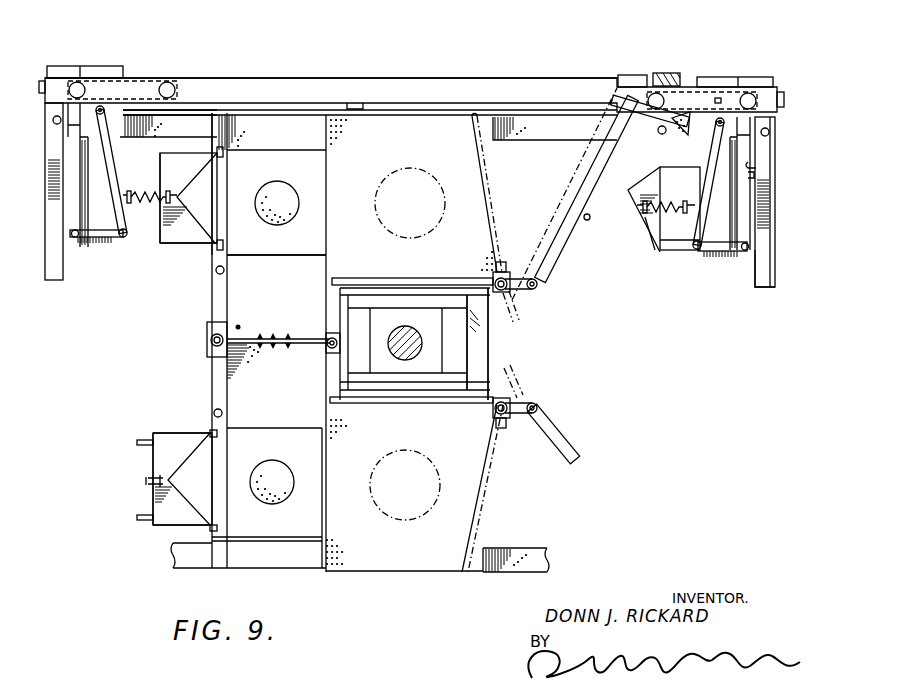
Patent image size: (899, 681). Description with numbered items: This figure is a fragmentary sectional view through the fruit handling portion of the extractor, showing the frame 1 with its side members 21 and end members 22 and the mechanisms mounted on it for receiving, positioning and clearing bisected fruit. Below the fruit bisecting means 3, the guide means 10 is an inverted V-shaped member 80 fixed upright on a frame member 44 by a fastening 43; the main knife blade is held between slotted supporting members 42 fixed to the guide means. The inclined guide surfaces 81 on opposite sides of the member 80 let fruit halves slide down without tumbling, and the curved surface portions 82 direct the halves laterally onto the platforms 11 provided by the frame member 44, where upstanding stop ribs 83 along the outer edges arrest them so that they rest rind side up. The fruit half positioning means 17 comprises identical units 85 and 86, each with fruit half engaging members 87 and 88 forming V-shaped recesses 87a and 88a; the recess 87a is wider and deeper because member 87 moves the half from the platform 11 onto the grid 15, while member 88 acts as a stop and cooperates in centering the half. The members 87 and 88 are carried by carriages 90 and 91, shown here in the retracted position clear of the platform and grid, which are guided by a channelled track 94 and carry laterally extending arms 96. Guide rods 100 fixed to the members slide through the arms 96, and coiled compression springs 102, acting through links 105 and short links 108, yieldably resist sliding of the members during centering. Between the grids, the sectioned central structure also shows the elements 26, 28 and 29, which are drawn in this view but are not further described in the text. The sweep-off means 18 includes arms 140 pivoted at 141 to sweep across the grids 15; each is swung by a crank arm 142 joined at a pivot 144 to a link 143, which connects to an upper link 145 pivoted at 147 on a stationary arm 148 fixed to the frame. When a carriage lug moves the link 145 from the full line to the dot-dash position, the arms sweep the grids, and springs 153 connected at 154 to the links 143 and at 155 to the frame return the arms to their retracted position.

The frame assembly 1 is at (405, 77).
The fruit bisecting means 3 is at (252, 330).
The guide means 10 is at (223, 375).
The platforms 11 is at (280, 254).
The screen members or grids 15 is at (330, 172).
The fruit half positioning means 17 is at (188, 250).
The sweep-off means 18 is at (436, 276).
The side members 21 is at (553, 140).
The end members 22 is at (762, 278).
The shaft 26 is at (403, 327).
The center block 28 is at (437, 356).
The side block 29 is at (484, 348).
The slotted supporting members 42 is at (207, 337).
The fastening 43 is at (213, 413).
The frame member 44 is at (247, 560).
The inverted V-shaped member 80 is at (225, 365).
The inclined guide surfaces 81 is at (232, 320).
The curved surface portions 82 is at (312, 251).
The stop ribs 83 is at (306, 141).
The positioning unit 85 is at (198, 268).
The positioning unit 86 is at (174, 430).
The fruit half engaging member 87 is at (162, 244).
The V-shaped fruit half receiving recess 87a is at (187, 233).
The fruit half engaging member 88 is at (653, 251).
The V-shaped fruit half receiving recess 88a is at (648, 217).
The carriage 90 is at (146, 74).
The carriage 91 is at (711, 89).
The channelled track 94 is at (343, 88).
The arm 96 is at (80, 207).
The guide rods 100 is at (137, 241).
The coiled compression springs 102 is at (153, 193).
The links 105 is at (108, 147).
The short links 108 is at (93, 242).
The sweep-off arms 140 is at (472, 147).
The pivot means 141 is at (498, 266).
The crank arm 142 is at (517, 295).
The link 143 is at (565, 228).
The pivot 144 is at (540, 284).
The upper link 145 is at (617, 101).
The pivot 147 is at (654, 130).
The stationary arm 148 is at (692, 116).
The springs 153 is at (755, 177).
The connection point 154 is at (647, 158).
The connection point 155 is at (757, 166).